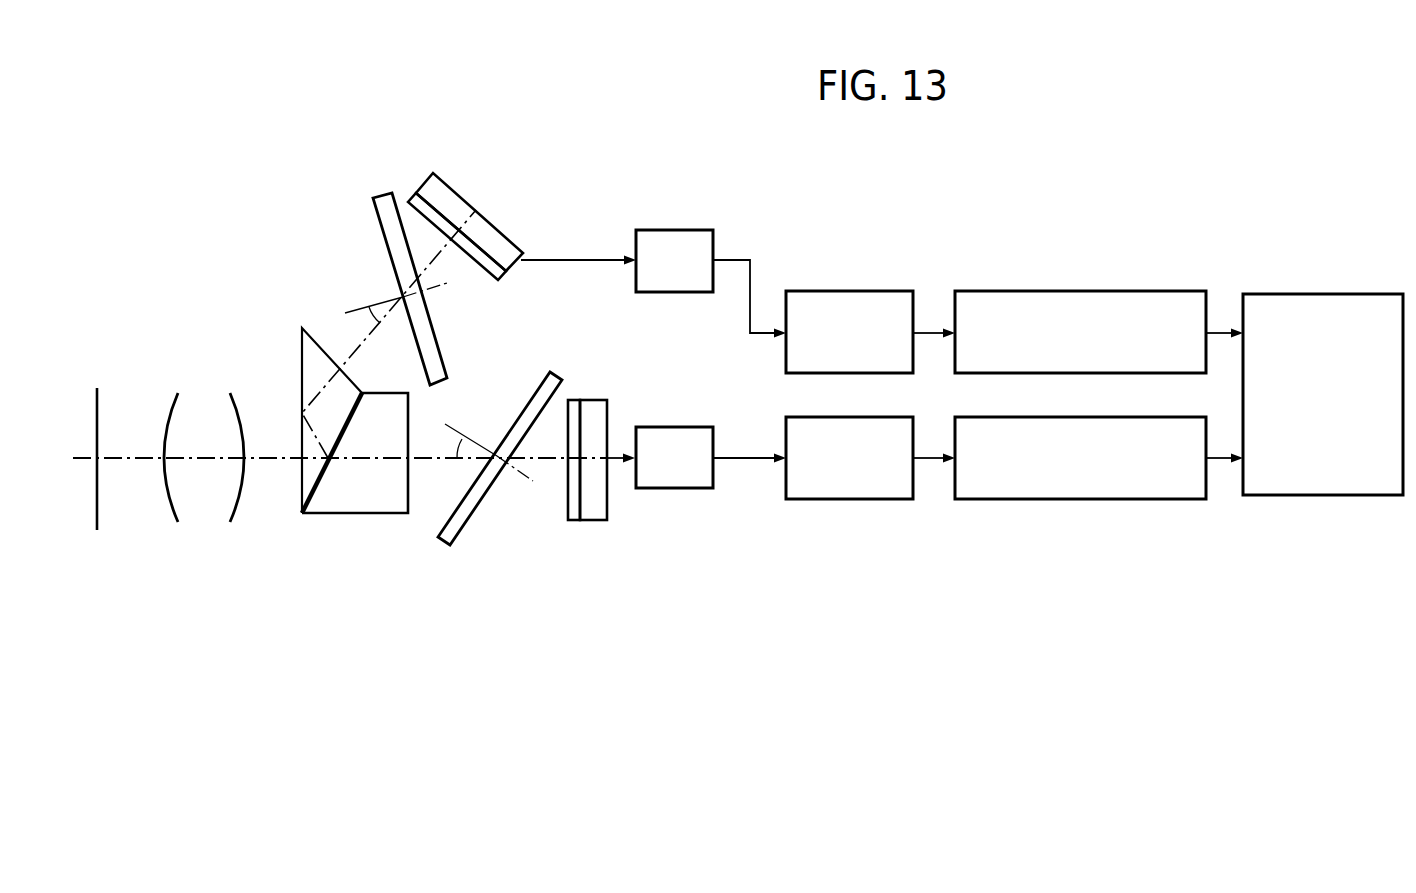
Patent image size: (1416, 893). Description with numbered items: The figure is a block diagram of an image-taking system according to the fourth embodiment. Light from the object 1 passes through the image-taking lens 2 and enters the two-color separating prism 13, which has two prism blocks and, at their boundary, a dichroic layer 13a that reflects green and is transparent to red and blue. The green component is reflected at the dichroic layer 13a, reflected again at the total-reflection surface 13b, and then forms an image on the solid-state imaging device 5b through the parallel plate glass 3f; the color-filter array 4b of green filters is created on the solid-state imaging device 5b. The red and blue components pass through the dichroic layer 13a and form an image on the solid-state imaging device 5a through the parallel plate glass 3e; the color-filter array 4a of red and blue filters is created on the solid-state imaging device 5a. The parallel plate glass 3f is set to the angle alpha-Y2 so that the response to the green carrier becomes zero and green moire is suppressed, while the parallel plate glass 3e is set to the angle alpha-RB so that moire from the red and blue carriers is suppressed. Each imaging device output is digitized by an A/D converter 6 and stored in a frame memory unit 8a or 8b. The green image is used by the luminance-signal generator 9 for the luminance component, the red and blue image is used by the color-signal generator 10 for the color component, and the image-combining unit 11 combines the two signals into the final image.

The object 1 is at (97, 388).
The image-taking lens 2 is at (203, 387).
The two-color separating prism 13 is at (375, 515).
The dichroic layer 13a is at (318, 483).
The total-reflection surface 13b is at (302, 353).
The parallel plate glass 3e is at (480, 510).
The parallel plate glass 3f is at (378, 218).
The color-filter array 4a is at (574, 398).
The color-filter array 4b is at (410, 199).
The solid-state imaging device 5a is at (600, 400).
The solid-state imaging device 5b is at (431, 177).
The A/D converter 6 is at (672, 229).
The frame memory unit 8a is at (850, 291).
The frame memory unit 8b is at (848, 499).
The luminance-signal generator 9 is at (1092, 291).
The color-signal generator 10 is at (1085, 499).
The image-combining unit 11 is at (1310, 294).